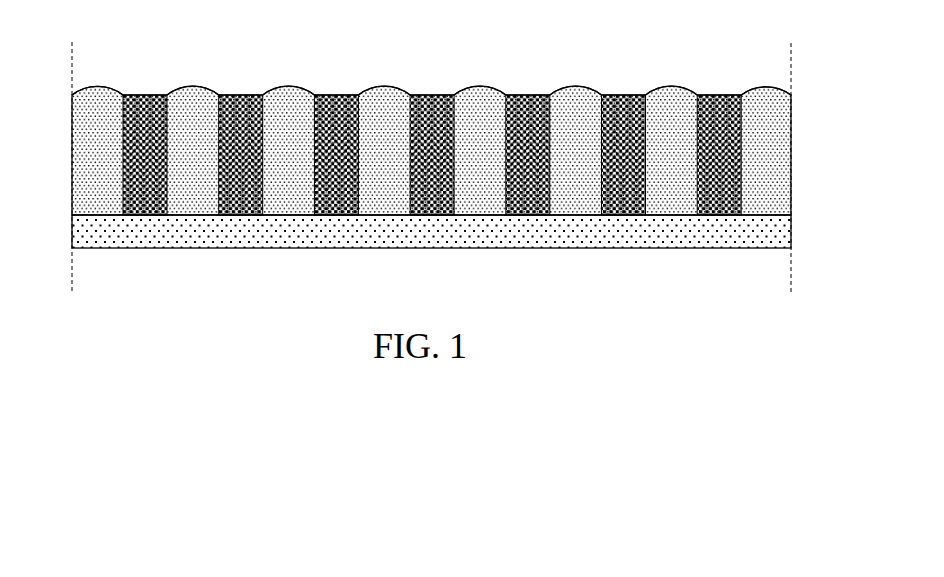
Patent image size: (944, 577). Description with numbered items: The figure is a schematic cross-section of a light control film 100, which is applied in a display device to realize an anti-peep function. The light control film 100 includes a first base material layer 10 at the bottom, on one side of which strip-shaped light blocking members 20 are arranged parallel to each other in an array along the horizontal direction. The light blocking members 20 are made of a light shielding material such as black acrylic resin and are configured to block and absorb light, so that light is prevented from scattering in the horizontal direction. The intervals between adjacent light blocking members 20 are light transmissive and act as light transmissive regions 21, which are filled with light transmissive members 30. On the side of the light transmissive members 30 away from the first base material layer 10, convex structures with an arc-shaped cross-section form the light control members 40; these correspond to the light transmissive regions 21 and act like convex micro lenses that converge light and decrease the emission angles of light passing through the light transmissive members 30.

The light control film 100 is at (193, 52).
The first base material layer 10 is at (753, 237).
The light blocking members 20 is at (741, 130).
The light transmissive regions 21 is at (668, 196).
The light transmissive members 30 is at (763, 175).
The light control members 40 is at (667, 87).